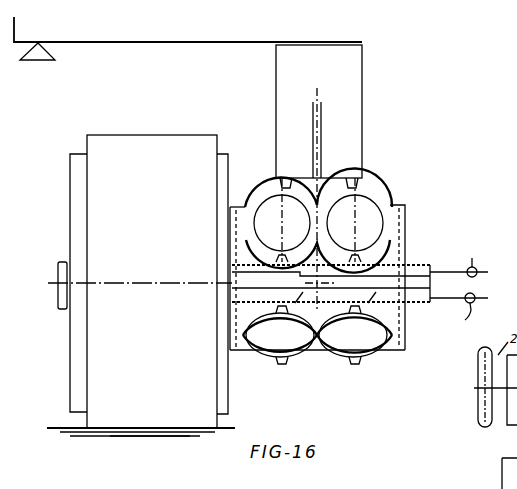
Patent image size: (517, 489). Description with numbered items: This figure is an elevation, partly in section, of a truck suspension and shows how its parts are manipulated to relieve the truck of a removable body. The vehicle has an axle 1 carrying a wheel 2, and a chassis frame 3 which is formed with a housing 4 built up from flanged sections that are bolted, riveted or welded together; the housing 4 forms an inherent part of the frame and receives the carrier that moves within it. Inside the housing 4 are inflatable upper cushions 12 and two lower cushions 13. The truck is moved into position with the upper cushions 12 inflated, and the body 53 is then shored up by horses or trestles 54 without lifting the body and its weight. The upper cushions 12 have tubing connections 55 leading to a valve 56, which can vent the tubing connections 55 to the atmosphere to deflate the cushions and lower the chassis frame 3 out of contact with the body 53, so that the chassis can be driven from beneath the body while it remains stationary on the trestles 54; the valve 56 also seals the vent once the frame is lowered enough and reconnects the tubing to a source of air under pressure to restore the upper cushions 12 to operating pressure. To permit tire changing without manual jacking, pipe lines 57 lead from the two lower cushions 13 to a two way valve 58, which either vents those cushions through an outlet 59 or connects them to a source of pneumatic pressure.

The axle 1 is at (428, 265).
The wheel 2 is at (228, 407).
The chassis frame 3 is at (352, 122).
The housing 4 is at (378, 200).
The upper cushions 12 is at (318, 220).
The lower cushions 13 is at (316, 328).
The body 53 is at (178, 46).
The horses or trestles 54 is at (40, 54).
The tubing connections 55 is at (441, 268).
The valve 56 is at (478, 268).
The pipe lines 57 is at (440, 296).
The two way valve 58 is at (476, 300).
The outlet 59 is at (461, 324).